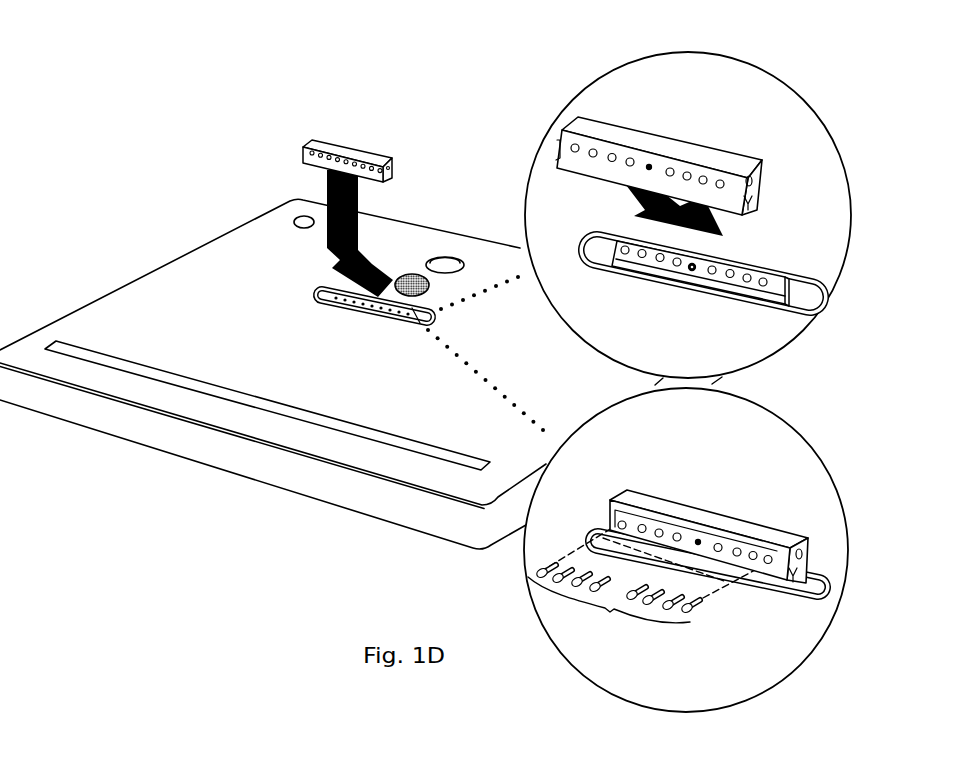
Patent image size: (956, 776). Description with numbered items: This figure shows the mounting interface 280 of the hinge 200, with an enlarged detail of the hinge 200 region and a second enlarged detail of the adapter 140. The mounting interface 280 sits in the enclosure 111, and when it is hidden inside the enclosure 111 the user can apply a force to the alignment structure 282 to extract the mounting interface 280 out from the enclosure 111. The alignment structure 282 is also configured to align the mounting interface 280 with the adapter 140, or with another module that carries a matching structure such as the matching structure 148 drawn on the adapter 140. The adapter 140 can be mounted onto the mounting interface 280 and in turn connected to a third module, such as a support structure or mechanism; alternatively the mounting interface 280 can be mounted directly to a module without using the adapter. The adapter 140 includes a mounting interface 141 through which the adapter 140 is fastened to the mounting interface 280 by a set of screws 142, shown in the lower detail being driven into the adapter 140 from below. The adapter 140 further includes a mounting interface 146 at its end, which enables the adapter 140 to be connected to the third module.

The enclosure 111 is at (163, 287).
The adapter 140 is at (302, 153).
The mounting interface 141 is at (700, 527).
The screws 142 is at (610, 610).
The mounting interface 146 is at (810, 537).
The matching structure 148 is at (649, 166).
The hinge 200 is at (757, 250).
The mounting interface 280 is at (322, 297).
The alignment structure 282 is at (690, 272).